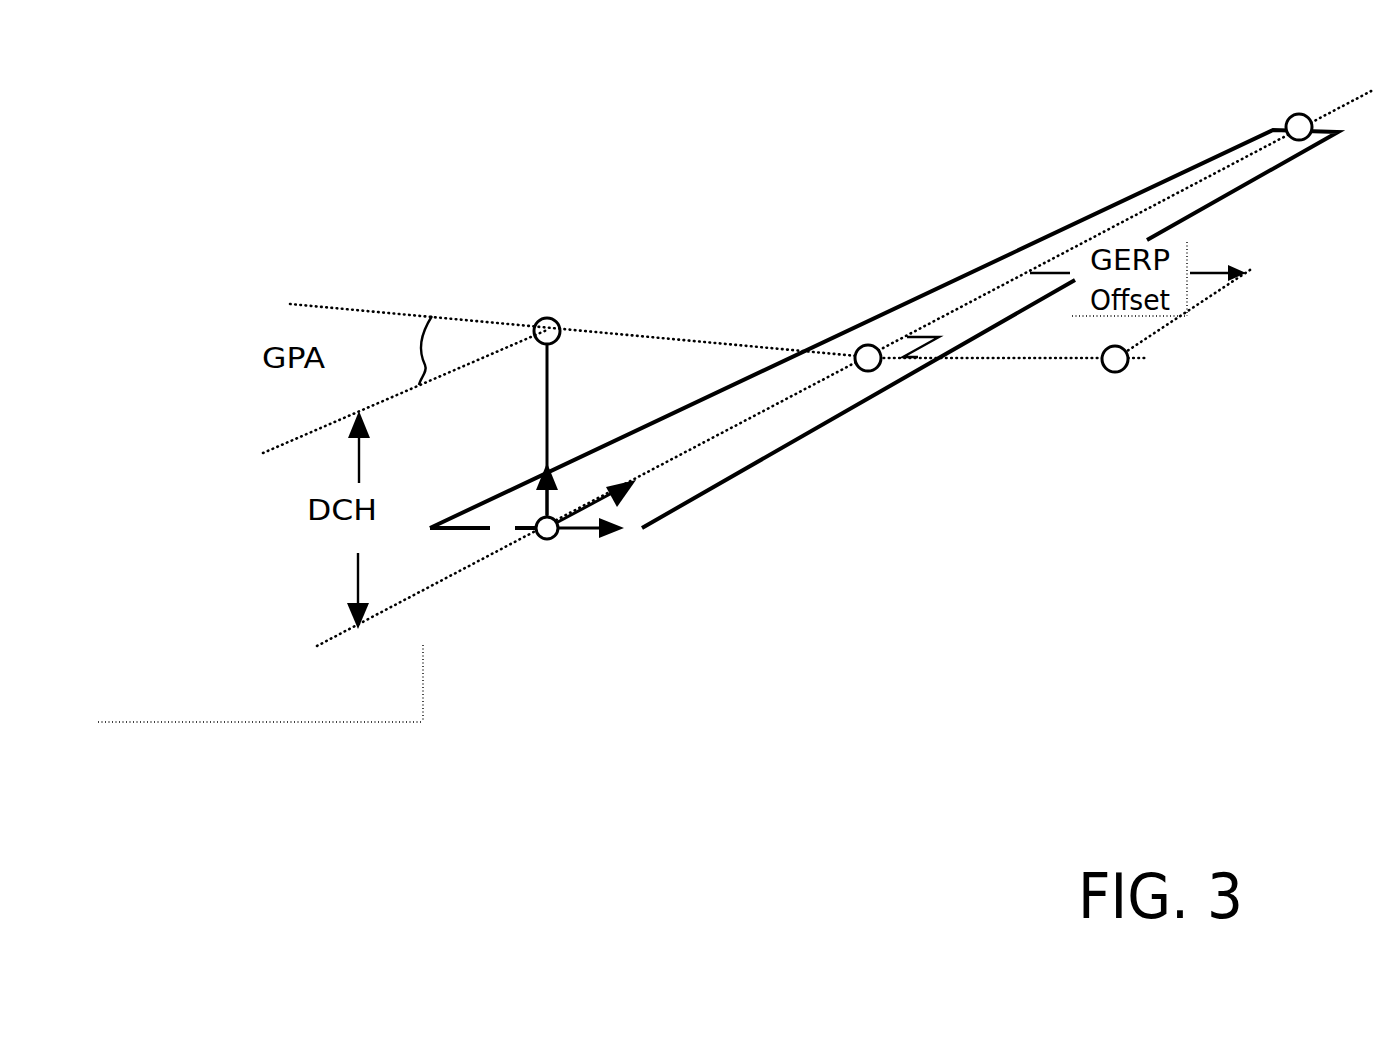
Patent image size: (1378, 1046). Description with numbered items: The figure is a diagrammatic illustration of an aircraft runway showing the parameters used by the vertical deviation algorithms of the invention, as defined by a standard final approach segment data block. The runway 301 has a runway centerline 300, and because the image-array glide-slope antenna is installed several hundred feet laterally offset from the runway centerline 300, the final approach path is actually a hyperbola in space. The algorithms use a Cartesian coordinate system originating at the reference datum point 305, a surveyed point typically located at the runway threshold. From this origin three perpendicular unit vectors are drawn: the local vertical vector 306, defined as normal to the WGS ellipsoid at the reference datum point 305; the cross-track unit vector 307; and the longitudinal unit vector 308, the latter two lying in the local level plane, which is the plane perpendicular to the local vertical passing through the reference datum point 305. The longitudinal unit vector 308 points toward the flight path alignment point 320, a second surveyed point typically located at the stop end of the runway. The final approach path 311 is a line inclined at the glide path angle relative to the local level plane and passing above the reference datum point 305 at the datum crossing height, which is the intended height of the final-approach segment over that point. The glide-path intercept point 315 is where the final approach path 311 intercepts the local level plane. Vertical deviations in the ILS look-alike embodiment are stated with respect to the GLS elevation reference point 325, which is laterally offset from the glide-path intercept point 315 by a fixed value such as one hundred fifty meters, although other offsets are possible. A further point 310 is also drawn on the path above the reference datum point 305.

The runway centerline 300 is at (400, 605).
The runway 301 is at (1040, 237).
The reference datum point (RDP) 305 is at (556, 540).
The local vertical vector u_vert 306 is at (543, 498).
The cross-track unit vector u_lat 307 is at (580, 532).
The longitudinal unit vector u_rw 308 is at (607, 483).
The datum crossing height point 310 is at (557, 322).
The final approach path 311 is at (372, 306).
The glide-path intercept point (GPIP) 315 is at (866, 349).
The flight path alignment point (FPAP) 320 is at (1286, 126).
The GLS elevation reference point (GERP) 325 is at (1106, 371).